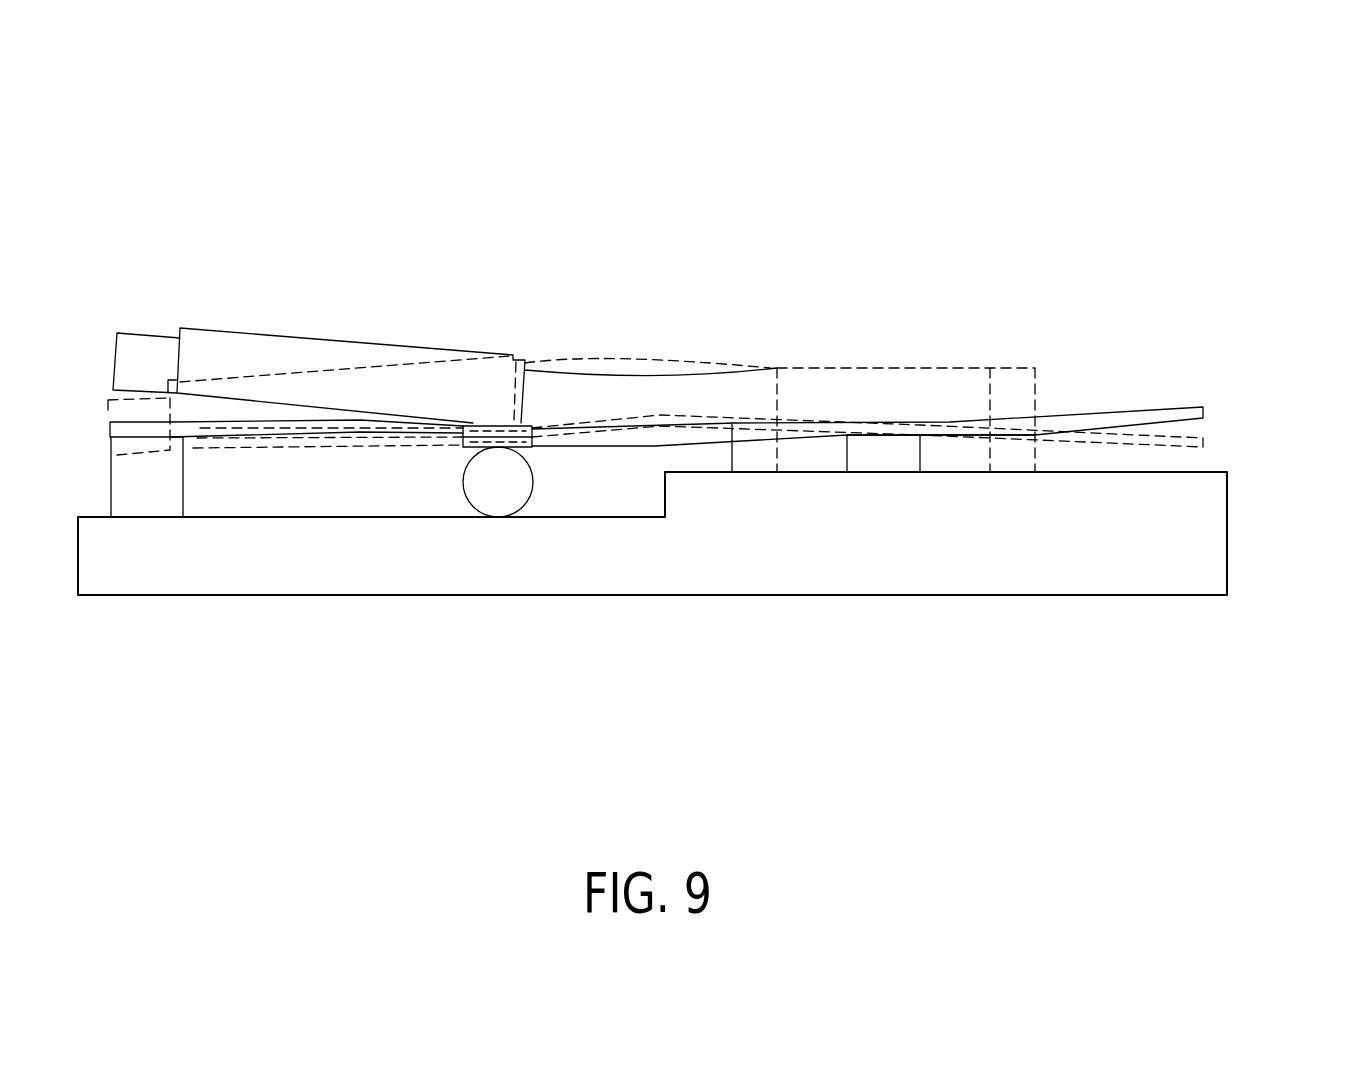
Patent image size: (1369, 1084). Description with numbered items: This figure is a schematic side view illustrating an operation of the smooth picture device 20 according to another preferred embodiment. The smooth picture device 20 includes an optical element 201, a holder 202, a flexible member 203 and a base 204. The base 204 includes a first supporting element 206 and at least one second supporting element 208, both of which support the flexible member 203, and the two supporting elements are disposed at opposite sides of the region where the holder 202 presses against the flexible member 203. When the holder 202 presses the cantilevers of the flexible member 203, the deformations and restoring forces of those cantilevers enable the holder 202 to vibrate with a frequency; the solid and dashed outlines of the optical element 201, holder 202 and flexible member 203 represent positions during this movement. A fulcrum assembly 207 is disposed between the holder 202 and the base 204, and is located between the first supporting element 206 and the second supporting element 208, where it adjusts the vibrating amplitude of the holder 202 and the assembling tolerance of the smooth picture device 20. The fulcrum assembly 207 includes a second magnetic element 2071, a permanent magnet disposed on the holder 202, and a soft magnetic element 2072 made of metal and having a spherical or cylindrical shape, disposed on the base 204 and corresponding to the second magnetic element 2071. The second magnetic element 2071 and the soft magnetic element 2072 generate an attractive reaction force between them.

The smooth picture device 20 is at (107, 122).
The optical element 201 is at (276, 350).
The holder 202 is at (637, 390).
The flexible member 203 is at (1171, 413).
The base 204 is at (1203, 534).
The first supporting element 206 is at (882, 459).
The fulcrum assembly 207 is at (508, 339).
The second magnetic element 2071 is at (485, 422).
The soft magnetic element 2072 is at (508, 482).
The second supporting element 208 is at (141, 503).